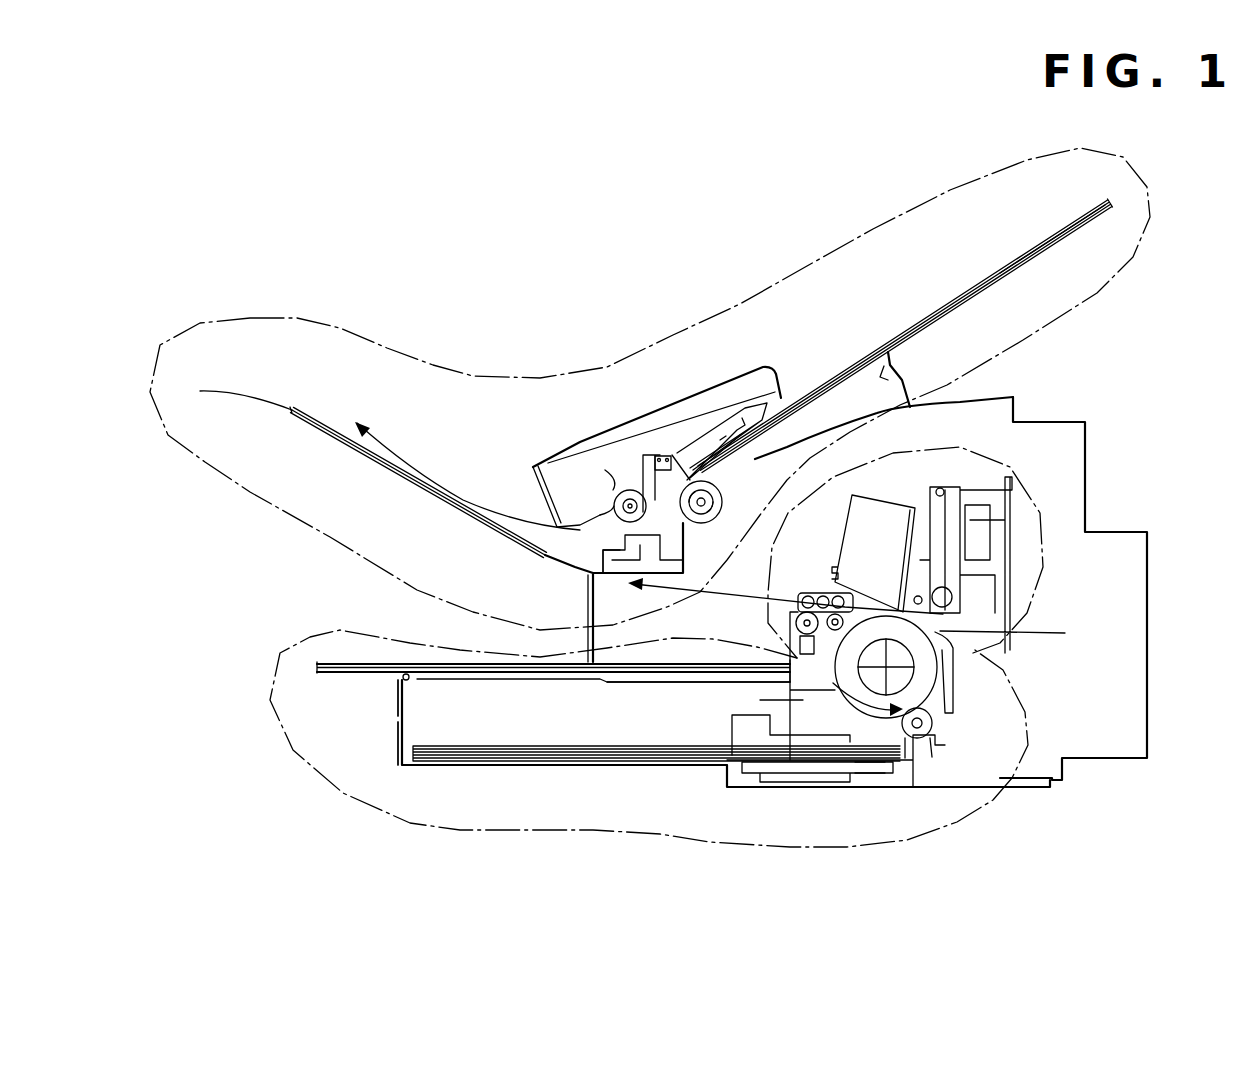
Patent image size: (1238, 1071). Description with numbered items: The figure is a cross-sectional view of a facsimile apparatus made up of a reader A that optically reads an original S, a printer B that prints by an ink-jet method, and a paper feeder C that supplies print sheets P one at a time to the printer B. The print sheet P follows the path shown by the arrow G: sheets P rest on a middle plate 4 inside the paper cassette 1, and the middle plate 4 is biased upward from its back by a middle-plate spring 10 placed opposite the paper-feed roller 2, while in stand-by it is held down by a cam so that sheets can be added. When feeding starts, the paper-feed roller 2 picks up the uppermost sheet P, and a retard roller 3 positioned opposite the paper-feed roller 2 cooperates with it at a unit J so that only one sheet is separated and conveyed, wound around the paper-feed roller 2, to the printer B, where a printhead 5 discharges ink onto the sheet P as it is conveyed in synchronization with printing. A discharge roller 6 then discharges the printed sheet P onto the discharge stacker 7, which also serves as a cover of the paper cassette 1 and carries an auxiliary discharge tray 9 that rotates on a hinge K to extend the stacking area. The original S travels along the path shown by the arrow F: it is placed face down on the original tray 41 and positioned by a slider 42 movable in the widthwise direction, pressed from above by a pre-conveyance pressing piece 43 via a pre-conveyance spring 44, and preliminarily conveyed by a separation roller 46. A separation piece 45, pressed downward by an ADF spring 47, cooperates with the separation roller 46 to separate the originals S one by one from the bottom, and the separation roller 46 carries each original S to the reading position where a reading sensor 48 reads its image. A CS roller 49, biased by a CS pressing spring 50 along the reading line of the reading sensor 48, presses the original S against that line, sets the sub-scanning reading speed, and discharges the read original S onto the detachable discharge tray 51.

The paper cassette 1 is at (400, 755).
The paper-feed roller 2 is at (925, 685).
The retard roller 3 is at (929, 726).
The middle plate 4 is at (813, 775).
The printhead 5 is at (875, 511).
The discharge roller 6 is at (791, 623).
The discharge stacker 7 is at (697, 674).
The auxiliary discharge tray 9 is at (497, 680).
The middle-plate spring 10 is at (864, 764).
The original tray 41 is at (1012, 280).
The slider 42 is at (812, 365).
The pre-conveyance pressing piece 43 is at (747, 450).
The pre-conveyance spring 44 is at (673, 445).
The separation piece 45 is at (672, 454).
The separation roller 46 is at (724, 502).
The ADF spring 47 is at (640, 464).
The reading sensor 48 is at (585, 555).
The CS roller 49 is at (580, 500).
The CS pressing spring 50 is at (605, 470).
The discharge tray 51 is at (448, 500).
The reader A is at (650, 389).
The printer B is at (955, 543).
The paper feeder C is at (649, 758).
The arrow F is at (456, 464).
The arrow G is at (774, 595).
The unit J is at (822, 699).
The hinge K is at (398, 680).
The print sheet P is at (553, 744).
The original S is at (987, 276).